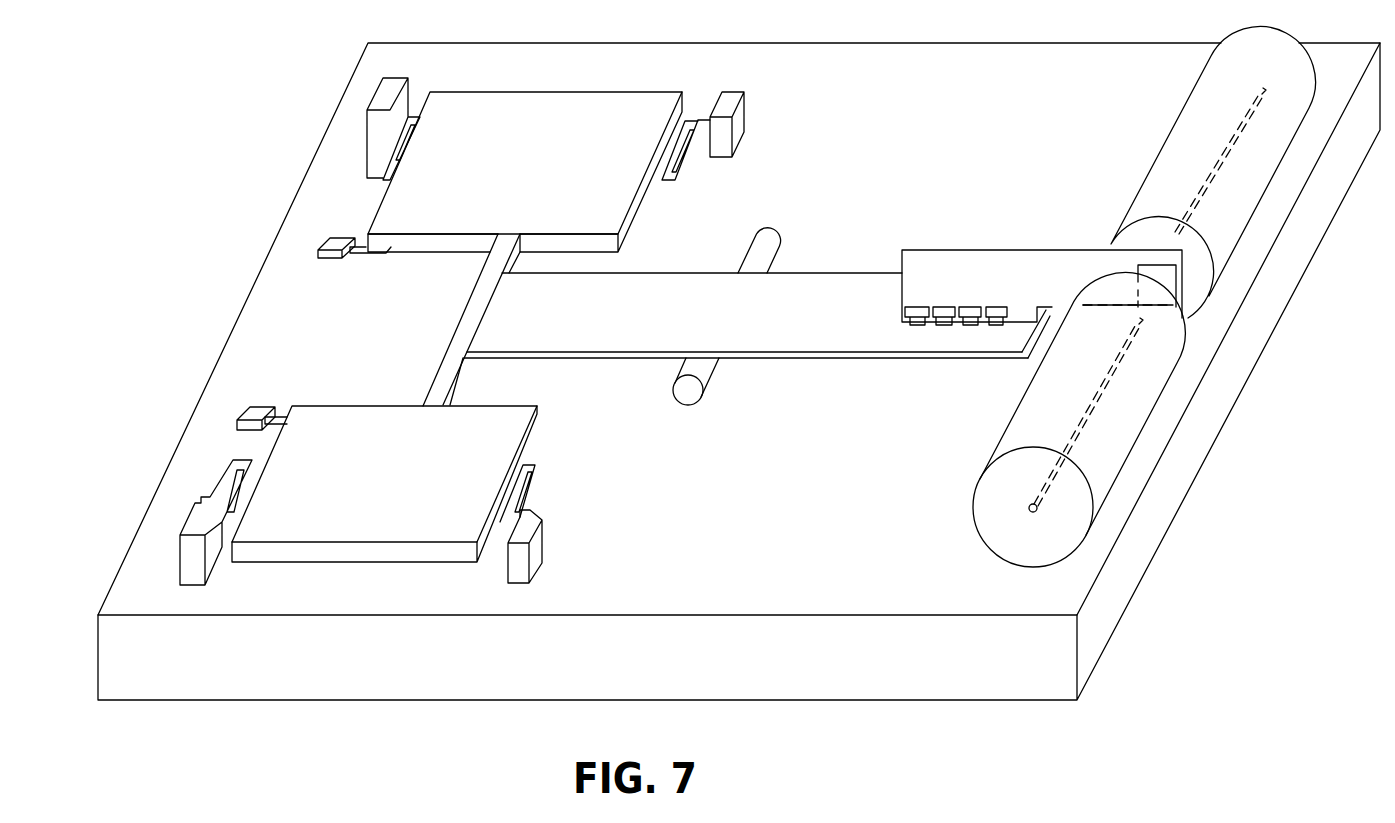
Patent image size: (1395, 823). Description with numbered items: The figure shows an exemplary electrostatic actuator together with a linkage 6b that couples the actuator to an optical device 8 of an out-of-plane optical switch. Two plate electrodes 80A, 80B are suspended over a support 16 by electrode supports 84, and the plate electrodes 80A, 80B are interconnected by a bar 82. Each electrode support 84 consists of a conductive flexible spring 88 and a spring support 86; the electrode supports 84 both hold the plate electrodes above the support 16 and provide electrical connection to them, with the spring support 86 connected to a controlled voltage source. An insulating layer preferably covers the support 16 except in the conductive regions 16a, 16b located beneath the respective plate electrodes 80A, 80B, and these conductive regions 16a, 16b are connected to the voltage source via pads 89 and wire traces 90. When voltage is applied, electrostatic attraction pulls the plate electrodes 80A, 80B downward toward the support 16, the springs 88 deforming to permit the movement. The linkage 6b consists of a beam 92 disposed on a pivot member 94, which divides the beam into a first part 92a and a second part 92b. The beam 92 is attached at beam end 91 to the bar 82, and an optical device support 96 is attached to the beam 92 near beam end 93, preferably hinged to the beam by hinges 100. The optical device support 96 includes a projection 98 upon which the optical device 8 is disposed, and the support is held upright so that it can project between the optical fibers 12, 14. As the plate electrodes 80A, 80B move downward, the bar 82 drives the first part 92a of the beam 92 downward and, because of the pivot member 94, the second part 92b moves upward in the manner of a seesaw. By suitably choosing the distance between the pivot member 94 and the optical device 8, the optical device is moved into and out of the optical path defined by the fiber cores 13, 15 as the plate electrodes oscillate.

The linkage 6b is at (680, 213).
The optical device 8 is at (1160, 278).
The optical fiber 12 is at (1096, 449).
The fiber core 13 is at (1097, 389).
The optical fiber 14 is at (1221, 208).
The fiber core 15 is at (1222, 157).
The support 16 is at (764, 456).
The conductive region 16a is at (340, 384).
The conductive region 16b is at (381, 268).
The plate electrode 80A is at (346, 487).
The plate electrode 80B is at (481, 171).
The bar 82 is at (482, 308).
The electrode support 84 is at (682, 83).
The spring support 86 is at (540, 540).
The spring 88 is at (530, 480).
The pad 89 is at (337, 243).
The wire trace 90 is at (360, 247).
The beam end 91 is at (485, 342).
The beam 92 is at (714, 323).
The first part of beam 92a is at (483, 365).
The second part of beam 92b is at (1005, 365).
The beam end 93 is at (1021, 338).
The pivot member 94 is at (771, 251).
The optical device support 96 is at (978, 296).
The projection 98 is at (1071, 268).
The hinge 100 is at (930, 307).